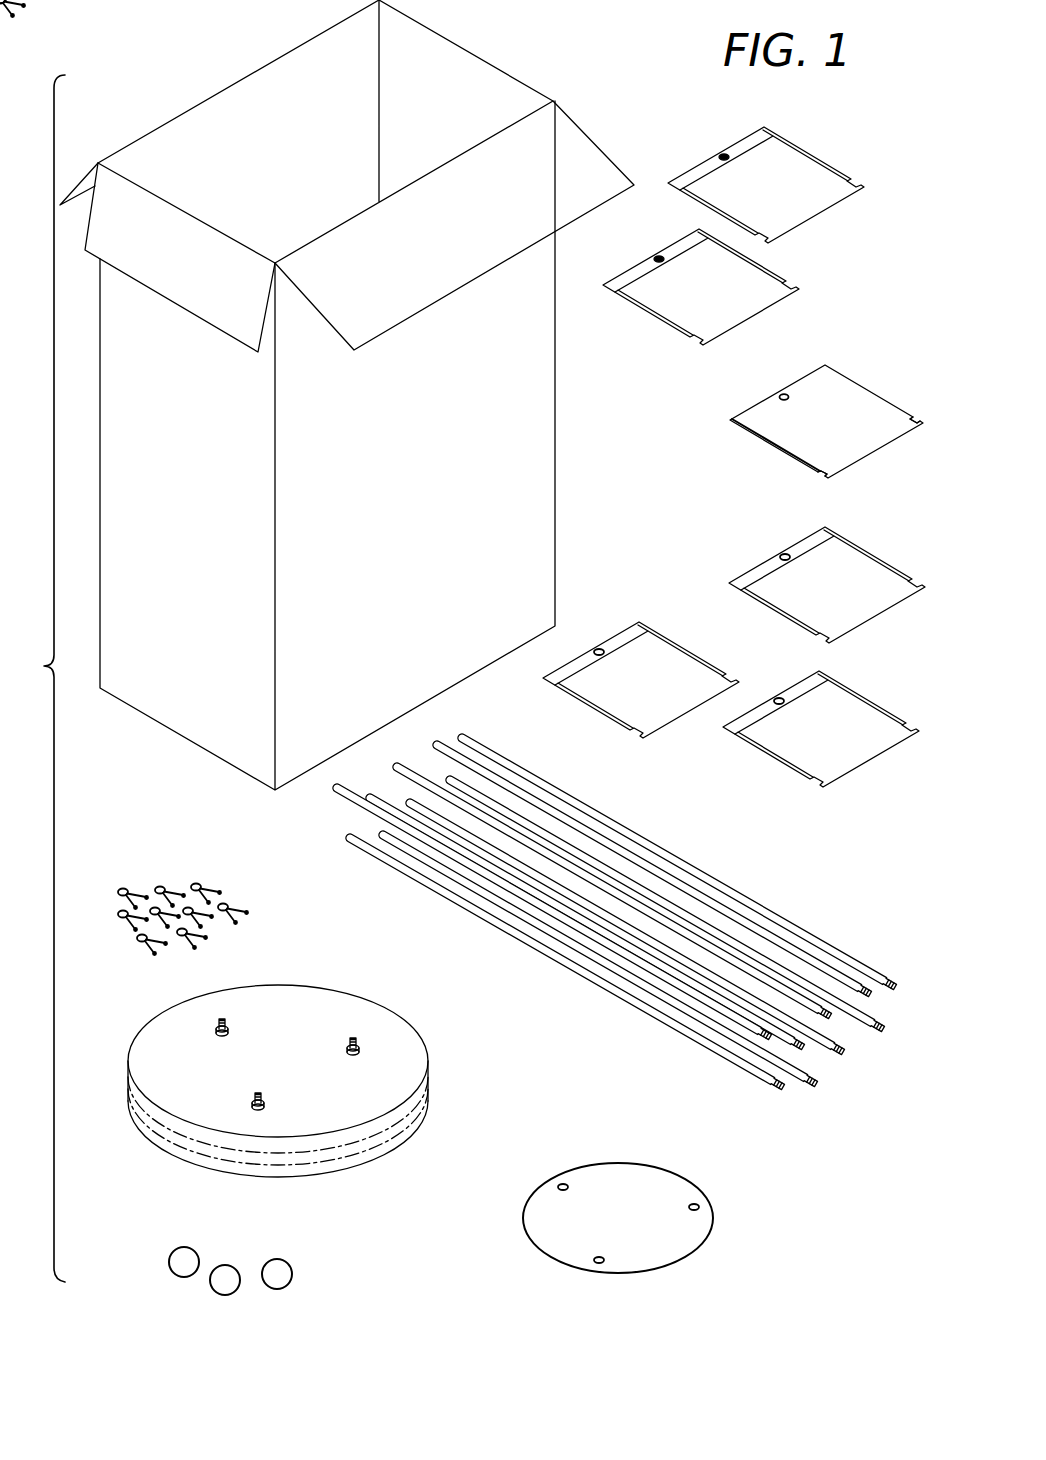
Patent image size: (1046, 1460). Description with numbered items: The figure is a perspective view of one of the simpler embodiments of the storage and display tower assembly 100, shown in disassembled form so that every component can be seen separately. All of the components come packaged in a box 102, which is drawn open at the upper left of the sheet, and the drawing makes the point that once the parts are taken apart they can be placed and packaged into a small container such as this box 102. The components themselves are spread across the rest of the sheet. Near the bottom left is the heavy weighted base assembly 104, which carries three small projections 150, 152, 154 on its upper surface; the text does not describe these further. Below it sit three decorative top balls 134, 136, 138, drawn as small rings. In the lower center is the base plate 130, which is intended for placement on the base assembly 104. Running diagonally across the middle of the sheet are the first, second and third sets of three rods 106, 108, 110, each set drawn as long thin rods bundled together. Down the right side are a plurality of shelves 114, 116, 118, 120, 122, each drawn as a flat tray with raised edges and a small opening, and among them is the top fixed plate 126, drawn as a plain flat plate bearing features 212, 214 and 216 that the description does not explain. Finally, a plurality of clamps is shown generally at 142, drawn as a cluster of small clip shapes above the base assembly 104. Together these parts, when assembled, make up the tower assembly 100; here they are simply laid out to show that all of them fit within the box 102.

The storage and display tower assembly 100 is at (628, 112).
The box 102 is at (211, 737).
The heavy weighted base assembly 104 is at (234, 597).
The first set of rods 106 is at (817, 1097).
The second set of rods 108 is at (847, 1067).
The third set of rods 110 is at (887, 1042).
The shelf 114 is at (658, 722).
The shelf 116 is at (858, 753).
The shelf 118 is at (860, 613).
The shelf 120 is at (737, 317).
The shelf 122 is at (808, 208).
The top fixed plate 126 is at (806, 425).
The base plate 130 is at (662, 1248).
The decorative top ball 134 is at (178, 1253).
The decorative top ball 136 is at (230, 1275).
The decorative top ball 138 is at (283, 1282).
The clamps 142 is at (252, 936).
The mounting stud 150 is at (253, 1104).
The mounting stud 152 is at (217, 1028).
The mounting stud 154 is at (359, 1052).
The hole 212 is at (780, 397).
The tab 214 is at (822, 472).
The notch 216 is at (913, 410).